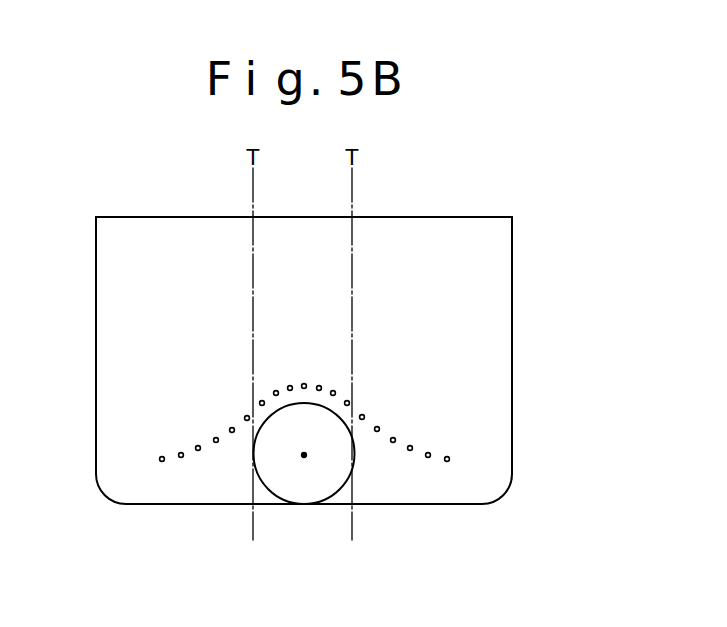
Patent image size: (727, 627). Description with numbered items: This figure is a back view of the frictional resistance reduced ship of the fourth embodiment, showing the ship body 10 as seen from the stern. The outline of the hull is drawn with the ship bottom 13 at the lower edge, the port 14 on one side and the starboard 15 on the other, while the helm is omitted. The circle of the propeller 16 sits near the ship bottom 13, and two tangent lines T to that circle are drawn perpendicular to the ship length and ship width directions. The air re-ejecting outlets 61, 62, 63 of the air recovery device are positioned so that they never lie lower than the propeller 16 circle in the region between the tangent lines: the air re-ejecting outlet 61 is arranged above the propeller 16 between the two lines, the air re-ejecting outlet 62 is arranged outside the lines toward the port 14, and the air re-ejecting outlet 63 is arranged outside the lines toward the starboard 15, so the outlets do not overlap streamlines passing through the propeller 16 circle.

The ship body 10 is at (305, 366).
The ship bottom 13 is at (157, 504).
The port 14 is at (96, 323).
The starboard 15 is at (512, 324).
The propeller 16 is at (355, 492).
The air re-ejecting outlet 61 is at (258, 384).
The air re-ejecting outlet 62 is at (153, 449).
The air re-ejecting outlet 63 is at (361, 410).